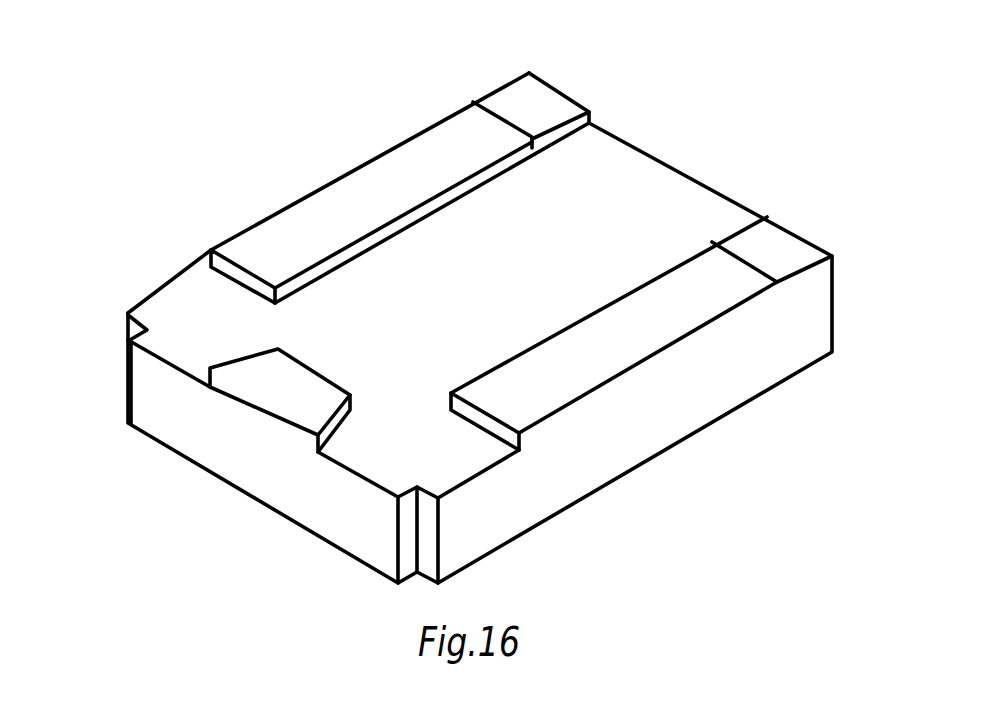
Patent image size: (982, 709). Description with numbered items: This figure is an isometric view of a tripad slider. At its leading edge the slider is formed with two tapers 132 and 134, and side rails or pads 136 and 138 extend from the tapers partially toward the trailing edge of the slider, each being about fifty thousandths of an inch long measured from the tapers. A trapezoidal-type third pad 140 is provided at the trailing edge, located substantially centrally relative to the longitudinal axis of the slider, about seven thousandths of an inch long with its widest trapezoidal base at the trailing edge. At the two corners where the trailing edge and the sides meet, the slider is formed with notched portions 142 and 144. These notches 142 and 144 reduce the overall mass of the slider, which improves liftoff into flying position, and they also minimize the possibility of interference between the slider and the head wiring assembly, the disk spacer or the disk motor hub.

The taper 132 is at (547, 102).
The taper 134 is at (755, 238).
The side rail or pad 136 is at (420, 160).
The side rail or pad 138 is at (592, 368).
The trapezoidal third pad 140 is at (307, 407).
The notched portion 142 is at (134, 330).
The notched portion 144 is at (417, 576).